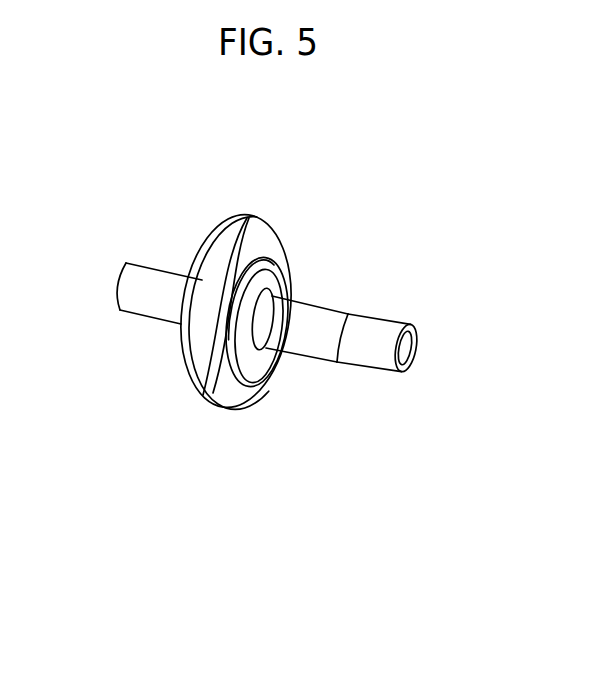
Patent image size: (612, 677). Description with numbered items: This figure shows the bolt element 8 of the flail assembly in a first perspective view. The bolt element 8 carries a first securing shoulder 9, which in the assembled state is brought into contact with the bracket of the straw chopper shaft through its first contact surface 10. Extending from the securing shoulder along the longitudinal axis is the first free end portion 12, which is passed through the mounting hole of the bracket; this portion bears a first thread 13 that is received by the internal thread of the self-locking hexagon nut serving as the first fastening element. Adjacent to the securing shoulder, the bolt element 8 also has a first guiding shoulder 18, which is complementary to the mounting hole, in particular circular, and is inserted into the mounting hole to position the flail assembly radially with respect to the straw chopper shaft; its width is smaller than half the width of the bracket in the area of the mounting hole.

The bolt element 8 is at (203, 500).
The first securing shoulder 9 is at (245, 215).
The first contact surface 10 is at (270, 247).
The first free end portion 12 is at (315, 350).
The first thread 13 is at (372, 349).
The first guiding shoulder 18 is at (257, 376).